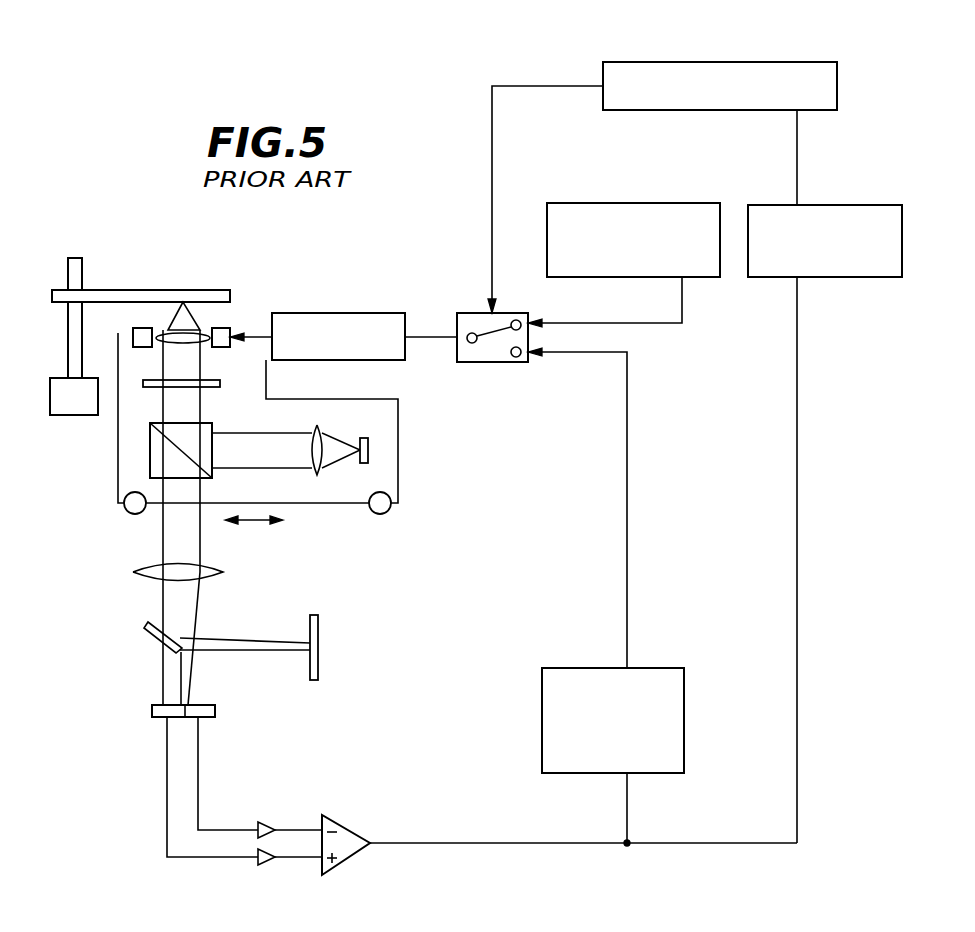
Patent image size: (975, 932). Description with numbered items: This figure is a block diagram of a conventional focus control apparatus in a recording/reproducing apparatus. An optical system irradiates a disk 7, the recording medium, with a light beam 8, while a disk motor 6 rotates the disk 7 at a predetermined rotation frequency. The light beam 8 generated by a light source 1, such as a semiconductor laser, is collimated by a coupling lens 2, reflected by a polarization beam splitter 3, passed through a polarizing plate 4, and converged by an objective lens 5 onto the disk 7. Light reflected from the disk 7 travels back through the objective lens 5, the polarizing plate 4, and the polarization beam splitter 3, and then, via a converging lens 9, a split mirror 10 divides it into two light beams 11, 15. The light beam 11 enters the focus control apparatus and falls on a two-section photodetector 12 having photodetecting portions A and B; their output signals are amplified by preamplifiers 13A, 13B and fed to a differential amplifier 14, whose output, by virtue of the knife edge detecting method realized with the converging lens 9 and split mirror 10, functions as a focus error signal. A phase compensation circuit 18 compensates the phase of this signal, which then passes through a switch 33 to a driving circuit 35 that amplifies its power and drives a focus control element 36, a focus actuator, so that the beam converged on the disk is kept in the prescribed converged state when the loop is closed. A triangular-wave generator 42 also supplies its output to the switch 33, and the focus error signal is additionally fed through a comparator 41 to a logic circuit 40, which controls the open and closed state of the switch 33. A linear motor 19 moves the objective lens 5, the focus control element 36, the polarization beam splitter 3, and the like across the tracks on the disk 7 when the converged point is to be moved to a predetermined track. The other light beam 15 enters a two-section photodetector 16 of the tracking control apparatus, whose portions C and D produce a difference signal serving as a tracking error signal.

The light source 1 is at (363, 438).
The coupling lens 2 is at (316, 474).
The polarization beam splitter 3 is at (151, 437).
The polarizing plate 4 is at (220, 381).
The objective lens 5 is at (182, 300).
The disk motor 6 is at (68, 408).
The disk 7 is at (208, 290).
The light beam 8 is at (250, 433).
The converging lens 9 is at (150, 568).
The split mirror 10 is at (152, 644).
The light beam 11 is at (190, 665).
The 2-section photodetector 12 is at (217, 711).
The preamplifier 13A is at (266, 868).
The preamplifier 13B is at (263, 822).
The differential amplifier 14 is at (355, 830).
The light beam 15 is at (236, 640).
The 2-section photodetector 16 is at (317, 613).
The phase compensation circuit 18 is at (684, 682).
The linear motor 19 is at (398, 399).
The switch 33 is at (505, 362).
The driving circuit 35 is at (367, 313).
The focus control element 36 is at (232, 327).
The logic circuit 40 is at (830, 62).
The comparator 41 is at (850, 205).
The triangular-wave generator 42 is at (690, 203).